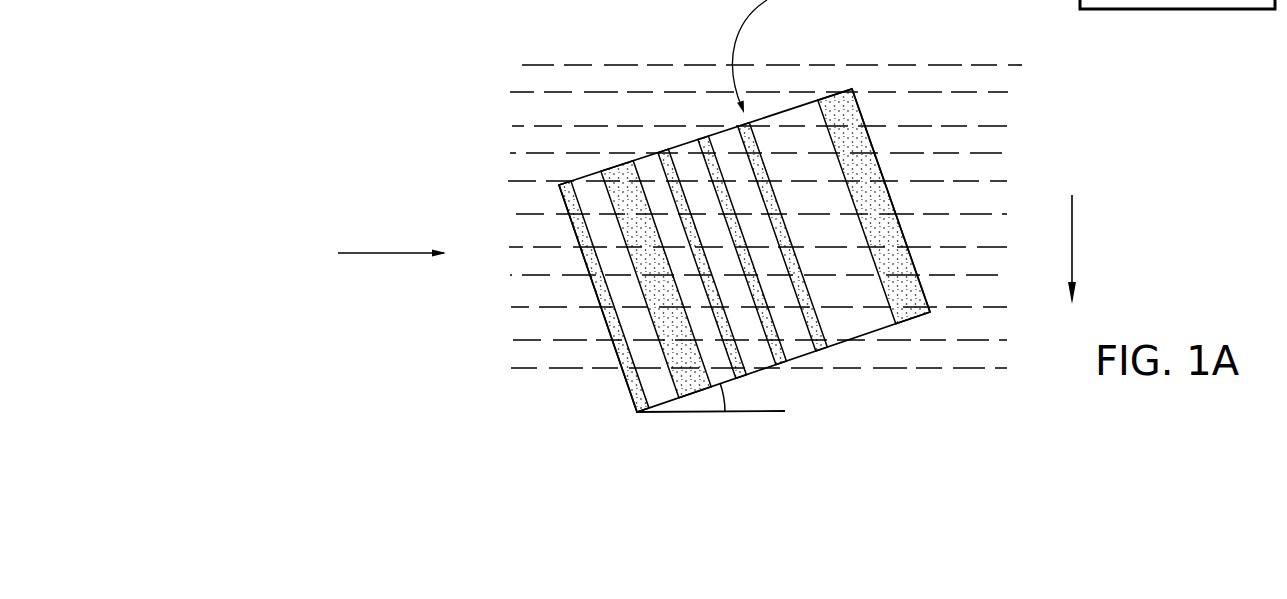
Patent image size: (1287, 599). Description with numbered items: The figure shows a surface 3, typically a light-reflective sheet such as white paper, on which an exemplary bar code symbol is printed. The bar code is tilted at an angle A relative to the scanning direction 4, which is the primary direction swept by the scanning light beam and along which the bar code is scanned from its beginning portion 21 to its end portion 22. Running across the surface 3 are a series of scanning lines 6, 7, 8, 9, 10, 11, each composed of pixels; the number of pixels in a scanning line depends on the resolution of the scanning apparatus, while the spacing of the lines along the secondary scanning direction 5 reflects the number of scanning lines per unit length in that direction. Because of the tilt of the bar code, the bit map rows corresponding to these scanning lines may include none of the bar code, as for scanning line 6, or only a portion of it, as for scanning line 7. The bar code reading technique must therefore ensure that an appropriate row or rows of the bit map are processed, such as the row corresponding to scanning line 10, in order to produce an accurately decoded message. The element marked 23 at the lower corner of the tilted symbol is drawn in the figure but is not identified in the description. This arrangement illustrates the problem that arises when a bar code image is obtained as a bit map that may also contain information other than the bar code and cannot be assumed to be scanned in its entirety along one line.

The surface 3 is at (577, 81).
The scanning line 6 is at (645, 64).
The scanning line 7 is at (530, 153).
The scanning line 8 is at (520, 181).
The scanning line 9 is at (514, 214).
The scanning line 10 is at (512, 247).
The scanning line 11 is at (518, 367).
The scanning direction 4 is at (365, 253).
The secondary scanning direction 5 is at (1072, 225).
The beginning portion 21 is at (618, 377).
The end portion 22 is at (870, 115).
The edge strip 23 is at (630, 391).
The angle A is at (724, 400).